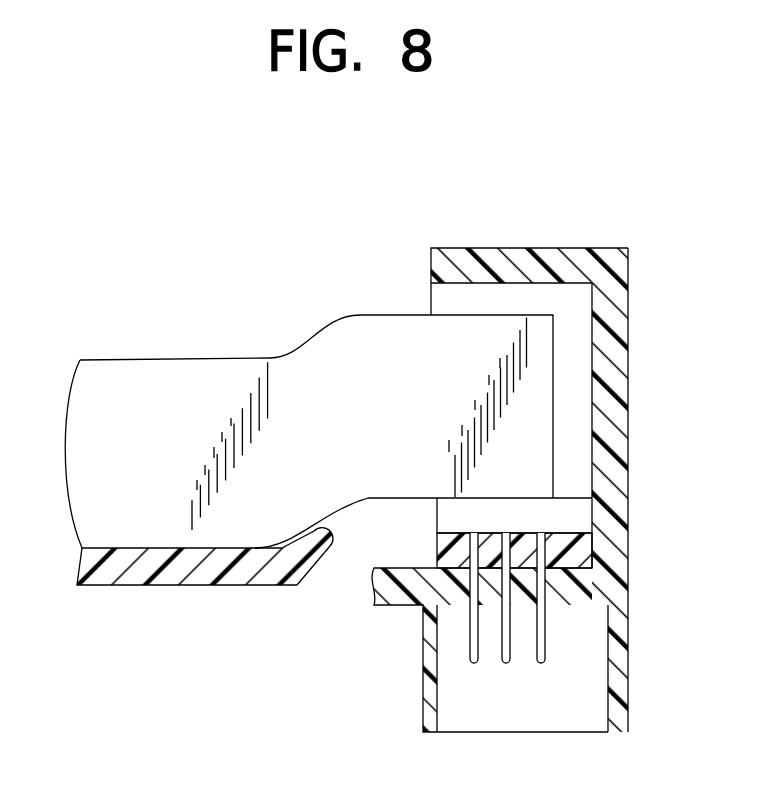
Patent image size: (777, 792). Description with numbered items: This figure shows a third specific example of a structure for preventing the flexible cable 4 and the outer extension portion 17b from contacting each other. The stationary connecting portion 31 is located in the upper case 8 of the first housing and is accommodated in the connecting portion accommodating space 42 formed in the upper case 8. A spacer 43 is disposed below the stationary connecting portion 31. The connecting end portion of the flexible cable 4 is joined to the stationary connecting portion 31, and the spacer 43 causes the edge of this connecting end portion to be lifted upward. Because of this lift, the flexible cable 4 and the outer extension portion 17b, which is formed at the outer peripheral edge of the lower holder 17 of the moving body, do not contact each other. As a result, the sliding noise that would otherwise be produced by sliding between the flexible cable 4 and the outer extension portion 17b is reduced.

The upper case 8 is at (547, 441).
The stationary connecting portion 31 is at (580, 310).
The connecting portion accommodating space 42 is at (613, 385).
The spacer 43 is at (578, 545).
The flexible cable 4 is at (97, 453).
The lower holder 17 is at (215, 596).
The outer extension portion 17b is at (321, 557).